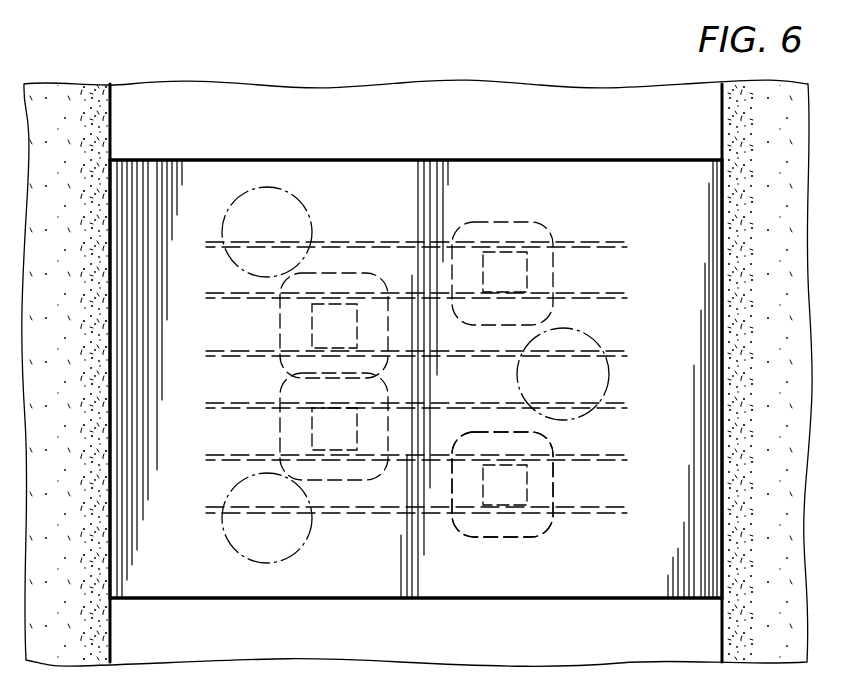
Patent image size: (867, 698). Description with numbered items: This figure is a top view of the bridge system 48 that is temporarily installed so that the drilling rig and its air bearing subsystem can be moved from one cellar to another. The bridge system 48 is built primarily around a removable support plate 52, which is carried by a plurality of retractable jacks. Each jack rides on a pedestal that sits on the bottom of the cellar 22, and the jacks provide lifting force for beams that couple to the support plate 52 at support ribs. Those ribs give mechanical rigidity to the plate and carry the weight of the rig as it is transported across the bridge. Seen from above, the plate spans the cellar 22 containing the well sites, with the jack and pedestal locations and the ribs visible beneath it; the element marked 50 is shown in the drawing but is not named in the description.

The cellar 22 is at (643, 645).
The bridge system 48 is at (292, 136).
The light emitting module 50 is at (553, 445).
The removable support plate 52 is at (565, 158).